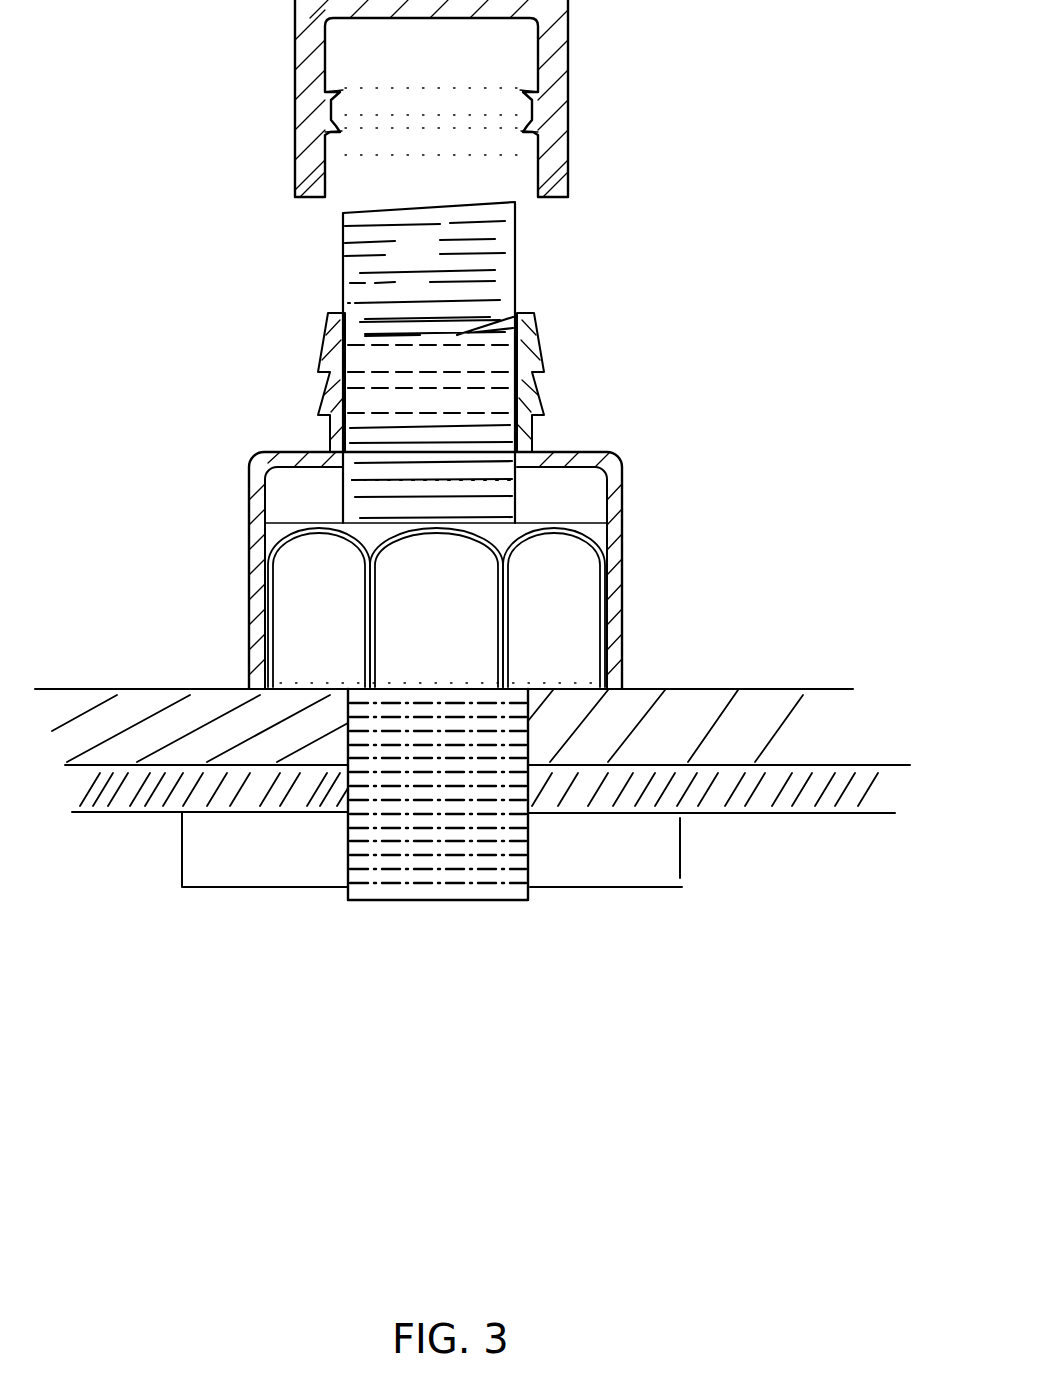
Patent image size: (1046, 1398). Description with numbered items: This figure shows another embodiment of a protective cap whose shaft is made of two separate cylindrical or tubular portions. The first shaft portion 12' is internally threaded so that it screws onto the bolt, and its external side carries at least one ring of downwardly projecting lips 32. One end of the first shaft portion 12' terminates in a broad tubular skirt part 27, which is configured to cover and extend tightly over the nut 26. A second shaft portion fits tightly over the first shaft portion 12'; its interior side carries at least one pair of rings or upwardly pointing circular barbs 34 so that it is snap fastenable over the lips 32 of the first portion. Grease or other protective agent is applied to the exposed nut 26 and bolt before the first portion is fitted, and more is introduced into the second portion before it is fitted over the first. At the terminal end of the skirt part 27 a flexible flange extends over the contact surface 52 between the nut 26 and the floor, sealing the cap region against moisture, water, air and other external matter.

The upwardly pointing circular barbs 34 is at (513, 147).
The first shaft portion 12' is at (518, 362).
The downwardly projecting lips 32 is at (553, 363).
The tubular skirt part 27 is at (620, 572).
The nut 26 is at (307, 588).
The contact surface 52 is at (823, 758).